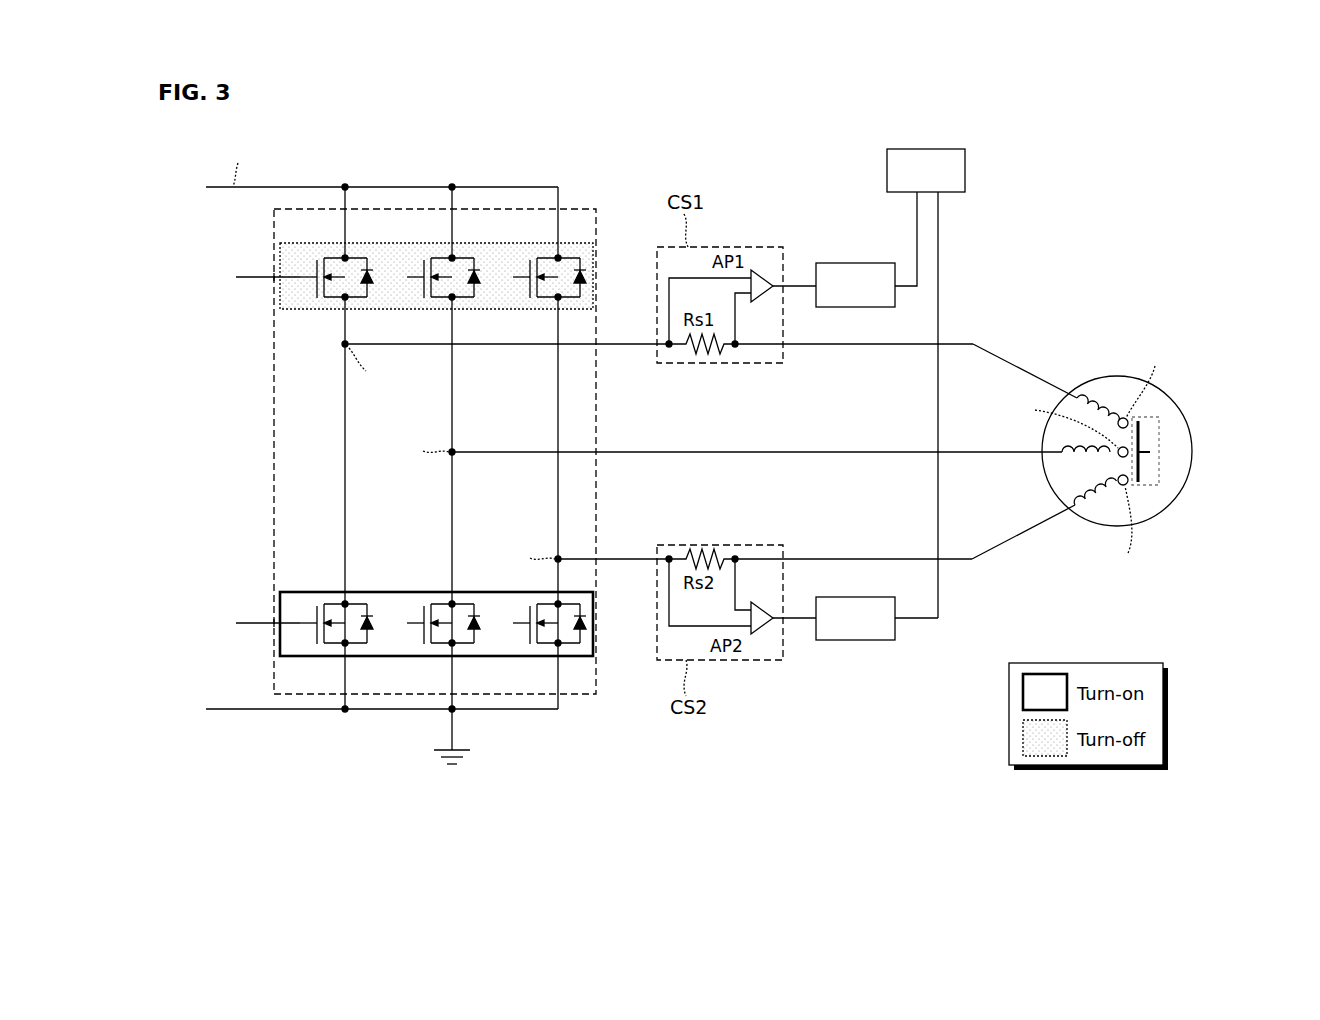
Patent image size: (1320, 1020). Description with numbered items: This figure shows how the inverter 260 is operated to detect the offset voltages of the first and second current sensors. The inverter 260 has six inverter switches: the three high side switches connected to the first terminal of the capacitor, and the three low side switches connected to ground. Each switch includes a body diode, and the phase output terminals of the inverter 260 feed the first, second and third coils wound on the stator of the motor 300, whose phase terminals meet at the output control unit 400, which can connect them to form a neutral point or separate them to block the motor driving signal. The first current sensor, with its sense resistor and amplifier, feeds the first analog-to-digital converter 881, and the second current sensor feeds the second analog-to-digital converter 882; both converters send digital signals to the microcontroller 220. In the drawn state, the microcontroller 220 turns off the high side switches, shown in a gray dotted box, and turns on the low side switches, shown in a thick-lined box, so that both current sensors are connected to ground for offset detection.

The inverter 260 is at (596, 209).
The microcontroller 220 is at (965, 168).
The first analog-to-digital converter 881 is at (845, 263).
The second analog-to-digital converter 882 is at (862, 641).
The motor 300 is at (1160, 516).
The output control unit 400 is at (1160, 425).